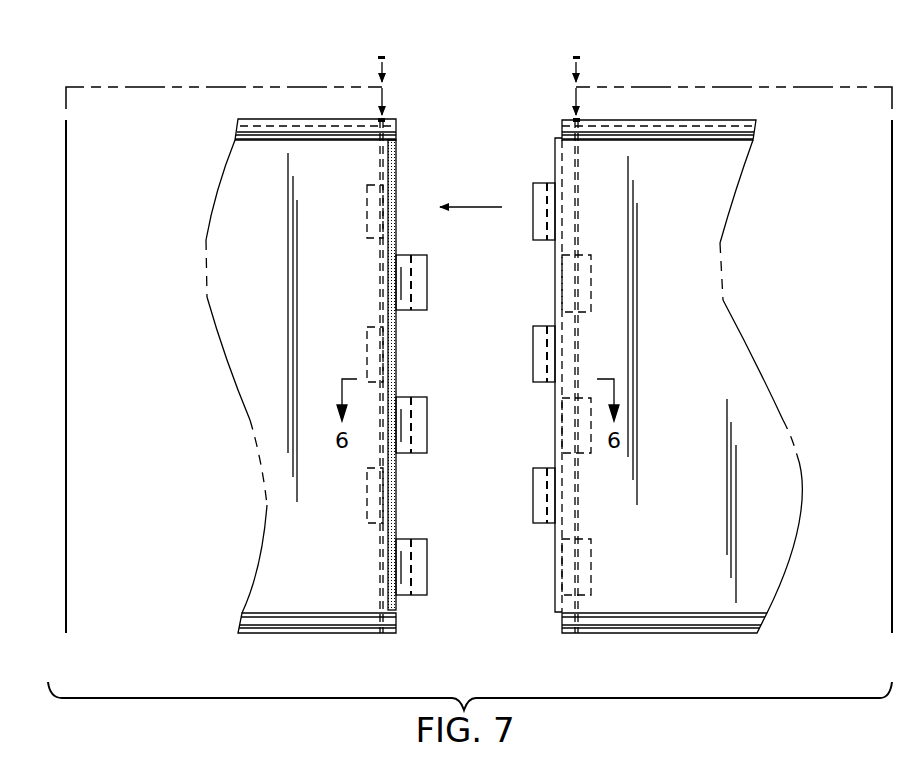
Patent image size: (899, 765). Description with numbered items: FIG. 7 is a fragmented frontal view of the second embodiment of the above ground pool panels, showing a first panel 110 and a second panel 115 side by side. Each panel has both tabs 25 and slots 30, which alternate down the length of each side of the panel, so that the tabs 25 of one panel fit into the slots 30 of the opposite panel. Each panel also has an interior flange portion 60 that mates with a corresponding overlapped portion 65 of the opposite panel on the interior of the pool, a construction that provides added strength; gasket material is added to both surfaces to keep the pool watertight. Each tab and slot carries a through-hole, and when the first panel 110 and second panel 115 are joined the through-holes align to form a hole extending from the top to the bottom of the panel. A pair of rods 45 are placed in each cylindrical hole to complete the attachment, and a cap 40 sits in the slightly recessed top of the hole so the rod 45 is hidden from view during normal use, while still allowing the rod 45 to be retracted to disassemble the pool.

The tabs 25 is at (427, 283).
The slots 30 is at (397, 198).
The cap 40 is at (382, 57).
The rod 45 is at (66, 226).
The interior flange portion 60 is at (555, 434).
The overlapped portion 65 is at (392, 350).
The first panel 110 is at (247, 313).
The second panel 115 is at (700, 307).